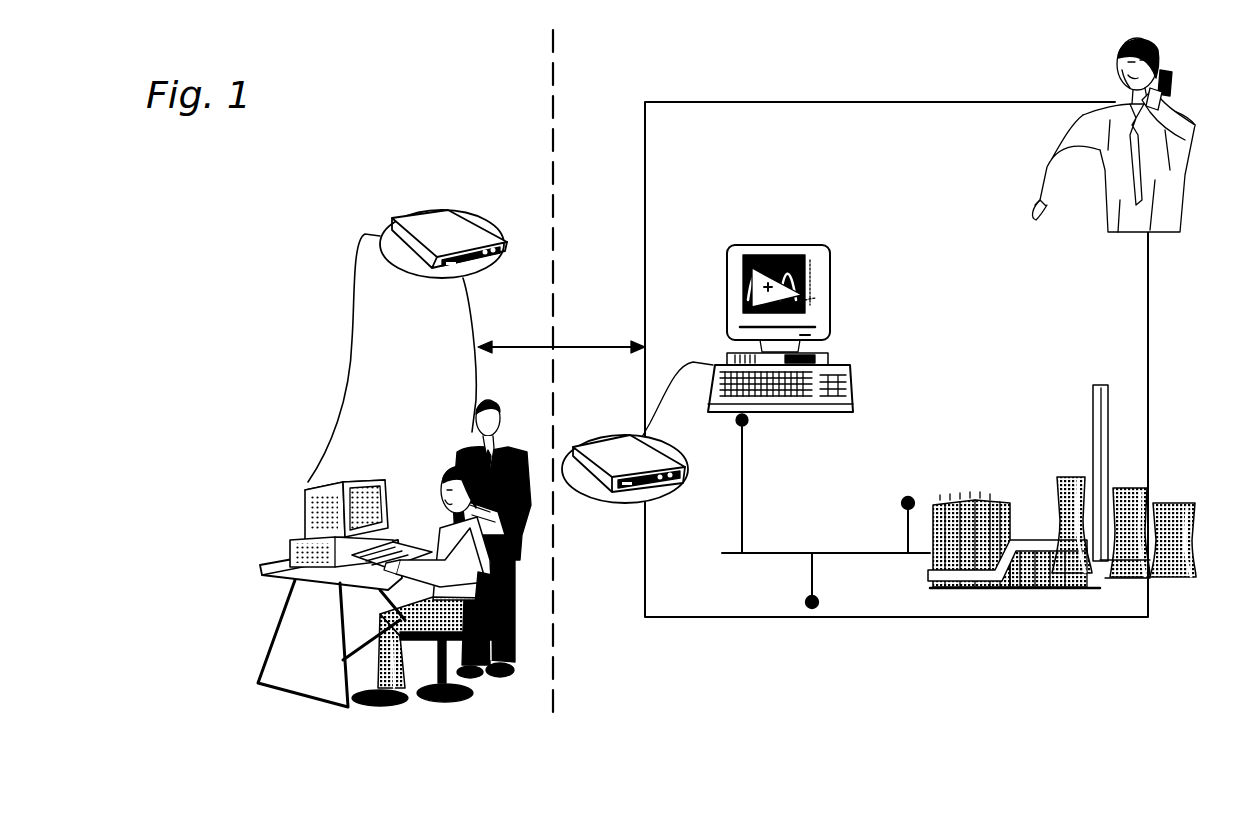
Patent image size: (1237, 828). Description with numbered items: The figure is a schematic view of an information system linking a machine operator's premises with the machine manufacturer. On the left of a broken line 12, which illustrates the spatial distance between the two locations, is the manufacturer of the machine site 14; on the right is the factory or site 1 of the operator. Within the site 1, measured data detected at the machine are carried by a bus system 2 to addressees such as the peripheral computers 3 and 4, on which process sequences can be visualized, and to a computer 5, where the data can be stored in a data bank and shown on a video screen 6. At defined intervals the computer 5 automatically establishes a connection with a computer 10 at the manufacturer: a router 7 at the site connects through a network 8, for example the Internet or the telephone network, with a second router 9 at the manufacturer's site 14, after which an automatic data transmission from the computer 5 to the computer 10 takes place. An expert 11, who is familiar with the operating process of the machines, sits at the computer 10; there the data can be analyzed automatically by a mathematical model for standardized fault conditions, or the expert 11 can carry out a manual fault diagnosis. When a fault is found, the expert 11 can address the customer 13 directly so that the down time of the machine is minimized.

The factory or site 1 is at (995, 495).
The bus system 2 is at (872, 556).
The computer 3 is at (910, 498).
The computer 4 is at (805, 601).
The computer 5 is at (845, 372).
The video screen 6 is at (812, 262).
The router 7 is at (620, 452).
The network 8 is at (575, 345).
The second router 9 is at (435, 228).
The computer 10 is at (292, 552).
The expert 11 is at (437, 517).
The broken line 12 is at (548, 47).
The customer 13 is at (1082, 143).
The manufacturer of the machine site 14 is at (262, 333).